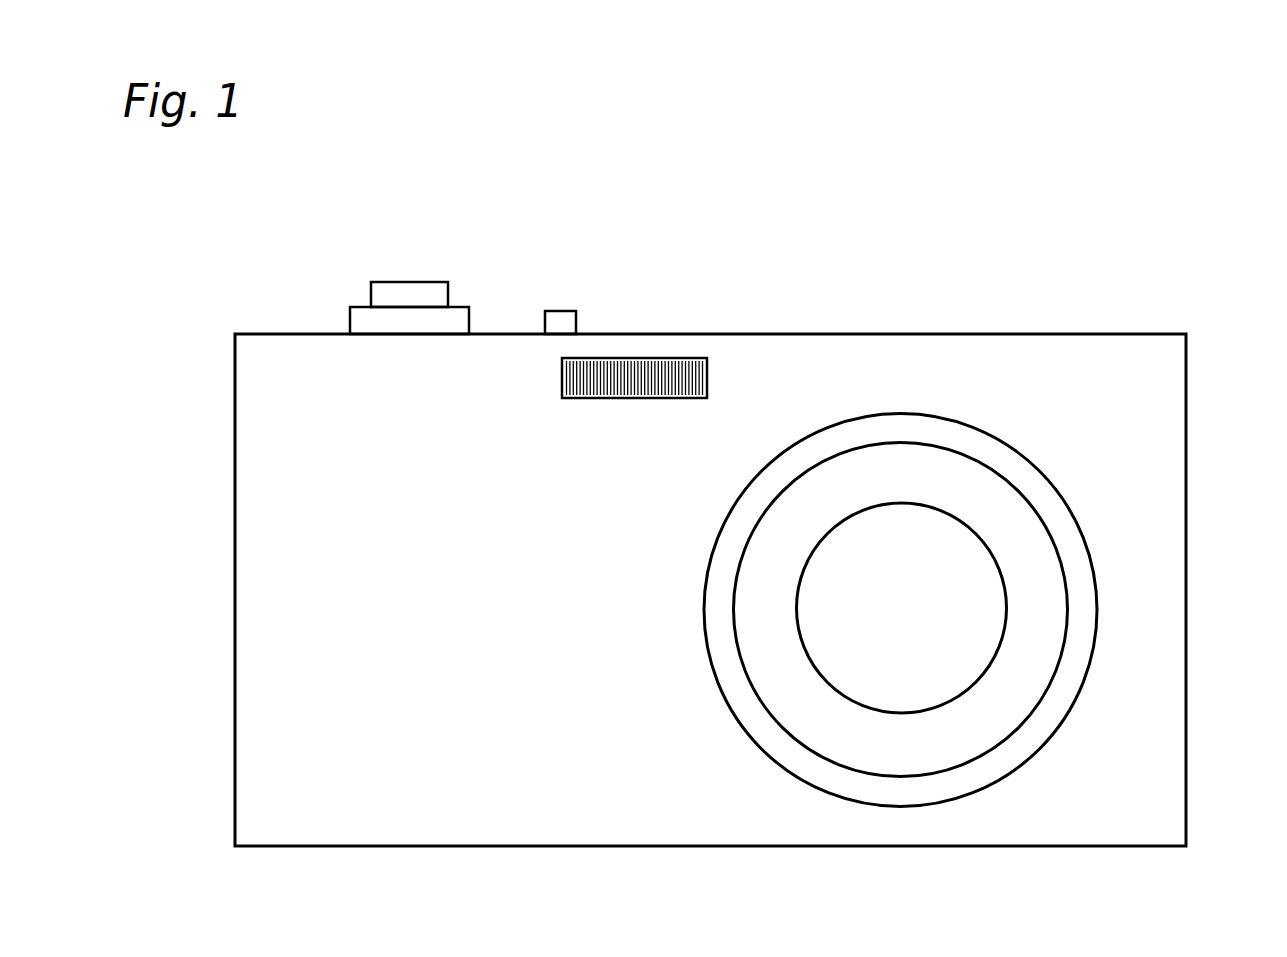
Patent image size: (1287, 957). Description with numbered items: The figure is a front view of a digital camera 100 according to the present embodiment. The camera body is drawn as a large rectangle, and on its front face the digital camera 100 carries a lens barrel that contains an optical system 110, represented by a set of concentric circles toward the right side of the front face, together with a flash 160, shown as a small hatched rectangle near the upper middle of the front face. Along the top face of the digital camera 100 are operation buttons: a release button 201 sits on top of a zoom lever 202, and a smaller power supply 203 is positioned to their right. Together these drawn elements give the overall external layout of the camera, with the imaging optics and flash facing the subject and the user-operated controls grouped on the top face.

The digital camera 100 is at (1044, 282).
The optical system 110 is at (953, 630).
The flash 160 is at (645, 383).
The release button 201 is at (398, 297).
The zoom lever 202 is at (457, 318).
The power supply 203 is at (560, 322).